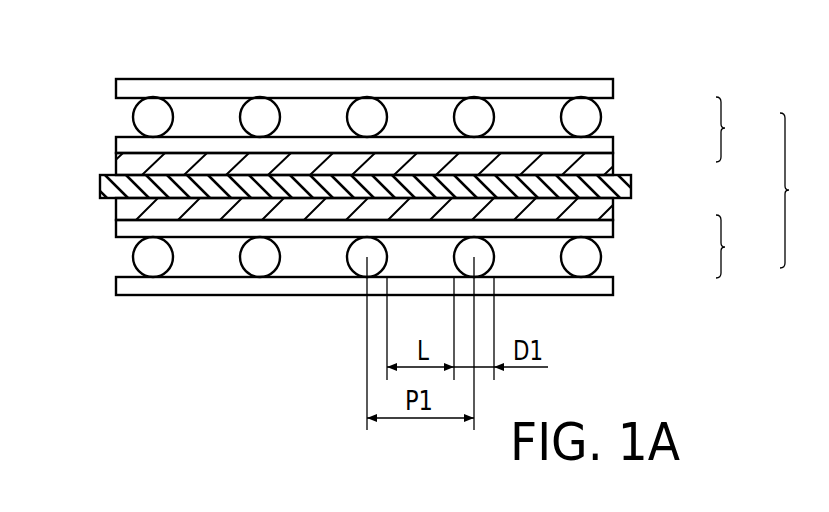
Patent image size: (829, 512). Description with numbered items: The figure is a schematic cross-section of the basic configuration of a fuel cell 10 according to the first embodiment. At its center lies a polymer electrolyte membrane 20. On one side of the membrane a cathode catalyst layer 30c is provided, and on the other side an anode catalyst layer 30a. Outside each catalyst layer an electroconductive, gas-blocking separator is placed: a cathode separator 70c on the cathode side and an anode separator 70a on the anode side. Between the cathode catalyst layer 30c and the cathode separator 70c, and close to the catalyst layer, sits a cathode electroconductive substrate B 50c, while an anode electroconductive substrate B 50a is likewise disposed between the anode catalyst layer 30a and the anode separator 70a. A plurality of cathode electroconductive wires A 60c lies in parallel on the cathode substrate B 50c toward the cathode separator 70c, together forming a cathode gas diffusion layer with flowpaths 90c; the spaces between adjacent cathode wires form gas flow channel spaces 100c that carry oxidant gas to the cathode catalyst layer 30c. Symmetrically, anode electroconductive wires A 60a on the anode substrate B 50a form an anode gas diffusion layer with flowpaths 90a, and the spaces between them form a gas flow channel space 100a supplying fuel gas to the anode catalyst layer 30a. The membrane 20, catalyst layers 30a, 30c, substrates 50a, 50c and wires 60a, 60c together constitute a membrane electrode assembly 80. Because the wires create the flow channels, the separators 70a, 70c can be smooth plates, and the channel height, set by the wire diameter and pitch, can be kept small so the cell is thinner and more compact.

The fuel cell 10 is at (123, 23).
The polymer electrolyte membrane 20 is at (632, 190).
The anode catalyst layer 30a is at (117, 205).
The cathode catalyst layer 30c is at (117, 161).
The anode electroconductive substrate B 50a is at (613, 228).
The cathode electroconductive substrate B 50c is at (613, 148).
The anode electroconductive wires A 60a is at (592, 259).
The cathode electroconductive wires A 60c is at (598, 113).
The anode separator 70a is at (601, 296).
The cathode separator 70c is at (601, 79).
The membrane electrode assembly 80 is at (803, 190).
The anode gas diffusion layer with flowpaths 90a is at (746, 246).
The cathode gas diffusion layer with flowpaths 90c is at (745, 129).
The gas flow channel space 100a is at (308, 265).
The gas flow channel space 100c is at (316, 105).